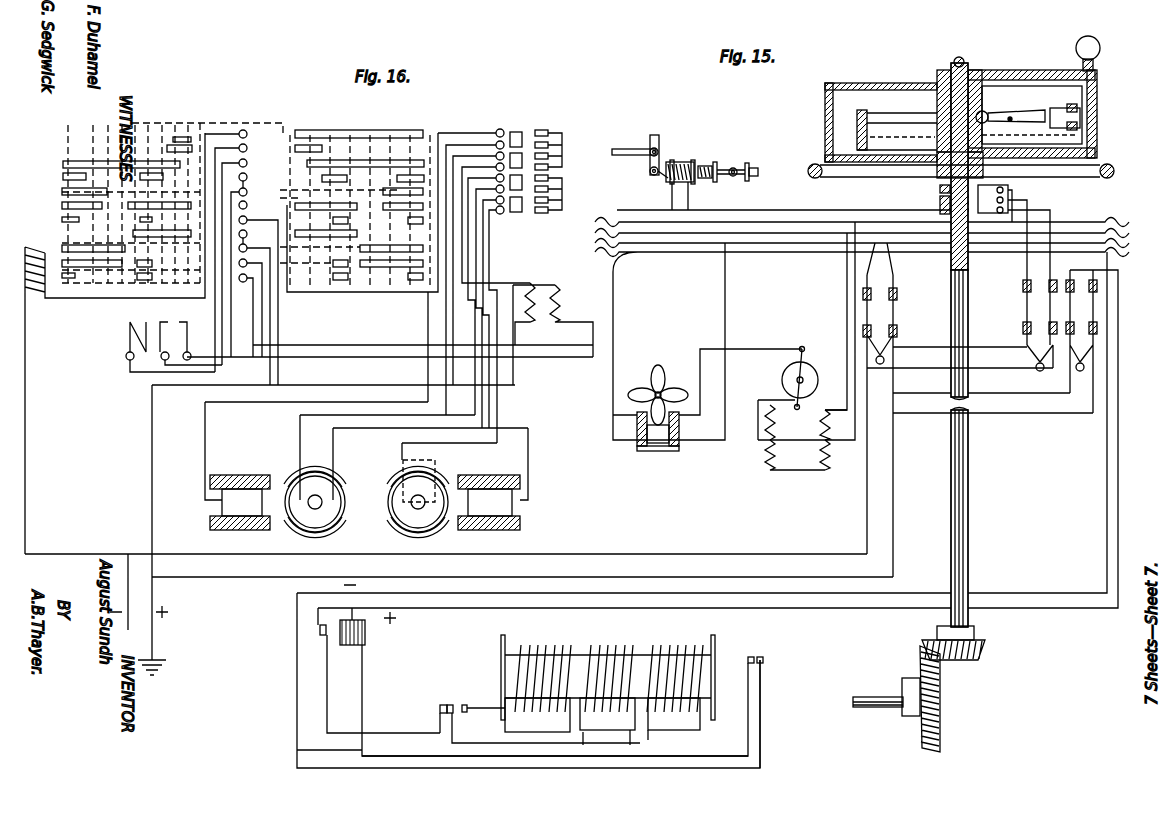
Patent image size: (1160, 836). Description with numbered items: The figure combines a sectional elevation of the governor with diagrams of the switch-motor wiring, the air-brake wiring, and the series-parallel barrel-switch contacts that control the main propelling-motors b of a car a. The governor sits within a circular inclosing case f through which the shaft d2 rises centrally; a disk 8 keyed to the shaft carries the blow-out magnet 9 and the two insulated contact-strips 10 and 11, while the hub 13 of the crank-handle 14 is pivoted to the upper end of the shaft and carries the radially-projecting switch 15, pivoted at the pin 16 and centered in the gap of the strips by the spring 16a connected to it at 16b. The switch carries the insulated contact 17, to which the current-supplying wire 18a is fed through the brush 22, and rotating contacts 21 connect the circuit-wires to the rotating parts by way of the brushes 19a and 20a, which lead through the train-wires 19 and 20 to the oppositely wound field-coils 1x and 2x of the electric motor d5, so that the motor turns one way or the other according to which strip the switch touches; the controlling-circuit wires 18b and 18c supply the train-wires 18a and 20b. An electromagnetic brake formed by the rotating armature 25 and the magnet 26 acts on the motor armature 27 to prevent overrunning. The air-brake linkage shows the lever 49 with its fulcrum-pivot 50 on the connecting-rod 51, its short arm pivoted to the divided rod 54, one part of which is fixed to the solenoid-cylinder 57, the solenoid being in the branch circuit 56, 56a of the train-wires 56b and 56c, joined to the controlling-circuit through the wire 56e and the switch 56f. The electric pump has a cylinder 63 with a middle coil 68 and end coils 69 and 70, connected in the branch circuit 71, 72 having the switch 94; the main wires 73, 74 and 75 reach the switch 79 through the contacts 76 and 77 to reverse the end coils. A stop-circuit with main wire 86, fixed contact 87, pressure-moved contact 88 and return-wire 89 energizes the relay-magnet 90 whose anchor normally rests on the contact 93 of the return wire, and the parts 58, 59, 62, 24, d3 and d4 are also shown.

In FIG. 16, the propelling-motor b is at (387, 498).
In FIG. 16, the contact 93 is at (322, 636).
In FIG. 16, the relay-magnet 90 is at (364, 640).
In FIG. 15, the relay-magnet 90 is at (752, 167).
In FIG. 16, the contact 76 is at (440, 706).
In FIG. 16, the switch 79 is at (540, 707).
In FIG. 16, the contact 77 is at (473, 699).
In FIG. 16, the main wire of end coil 69 75 is at (486, 719).
In FIG. 16, the cylinder 63 is at (702, 685).
In FIG. 16, the end coil 69 is at (537, 715).
In FIG. 16, the middle coil 68 is at (607, 714).
In FIG. 16, the end coil 70 is at (662, 712).
In FIG. 16, the main wire of middle coil 73 is at (595, 744).
In FIG. 16, the main wire of end coil 70 74 is at (637, 743).
In FIG. 16, the contact 62 is at (666, 740).
In FIG. 16, the movable contact 88 is at (752, 650).
In FIG. 16, the fixed contact 87 is at (763, 660).
In FIG. 16, the main wire of stop-circuit 86 is at (766, 722).
In FIG. 16, the return-wire of stop-circuit 89 is at (555, 747).
In FIG. 15, the train-wire 56c is at (822, 205).
In FIG. 15, the train-wire 20 is at (861, 217).
In FIG. 15, the train-wire 19 is at (861, 231).
In FIG. 15, the train-circuit wire 18a is at (575, 244).
In FIG. 15, the train-wire 20b is at (874, 341).
In FIG. 15, the connecting-rod 51 is at (634, 142).
In FIG. 15, the lever 49 is at (658, 137).
In FIG. 15, the fulcrum-pivot 50 is at (650, 155).
In FIG. 15, the rod 54 is at (660, 176).
In FIG. 15, the solenoid-cylinder 57 is at (681, 163).
In FIG. 15, the branch circuit 56 is at (661, 195).
In FIG. 15, the spring 59 is at (711, 160).
In FIG. 15, the plate 58 is at (717, 165).
In FIG. 15, the branch circuit 56a is at (883, 289).
In FIG. 15, the train-wire 56b is at (761, 194).
In FIG. 15, the disk 8 is at (825, 150).
In FIG. 15, the inclosing case f is at (881, 110).
In FIG. 15, the hub 13 is at (946, 106).
In FIG. 15, the crank-handle 14 is at (1033, 75).
In FIG. 15, the knob 24 is at (1098, 64).
In FIG. 15, the contact-strip 10 is at (913, 113).
In FIG. 15, the contact-strip 11 is at (902, 137).
In FIG. 15, the pivot-pin 16 is at (987, 106).
In FIG. 15, the spring 16a is at (1016, 105).
In FIG. 15, the blow-out magnet 9 is at (1079, 118).
In FIG. 15, the switch 15 is at (972, 168).
In FIG. 15, the spring connection 16b is at (1029, 134).
In FIG. 15, the insulated contact 17 is at (1110, 145).
In FIG. 15, the shaft d2 is at (970, 318).
In FIG. 15, the rod d3 is at (961, 183).
In FIG. 15, the rotating contacts 21 is at (938, 202).
In FIG. 15, the brush 22 is at (1012, 188).
In FIG. 15, the branch 19a is at (845, 297).
In FIG. 15, the branch 20a is at (853, 278).
In FIG. 15, the rotating armature 25 is at (658, 391).
In FIG. 15, the magnet 26 is at (679, 450).
In FIG. 15, the armature 27 is at (797, 380).
In FIG. 15, the electric motor d5 is at (812, 376).
In FIG. 15, the field-coil 2x is at (802, 420).
In FIG. 15, the field-coil 1x is at (797, 468).
In FIG. 15, the controlling-circuit wire 18c is at (866, 522).
In FIG. 15, the controlling-circuit wire 18b is at (907, 426).
In FIG. 15, the circuit closing and breaking switch 56f is at (1040, 325).
In FIG. 15, the wire 56e is at (960, 356).
In FIG. 15, the circuit breaking and closing switch 94 is at (995, 341).
In FIG. 15, the return circuit-wire 72 is at (1019, 585).
In FIG. 15, the branch circuit wire 71 is at (1042, 620).
In FIG. 15, the bevel gear d4 is at (968, 660).
In FIG. 15, the car a is at (865, 697).